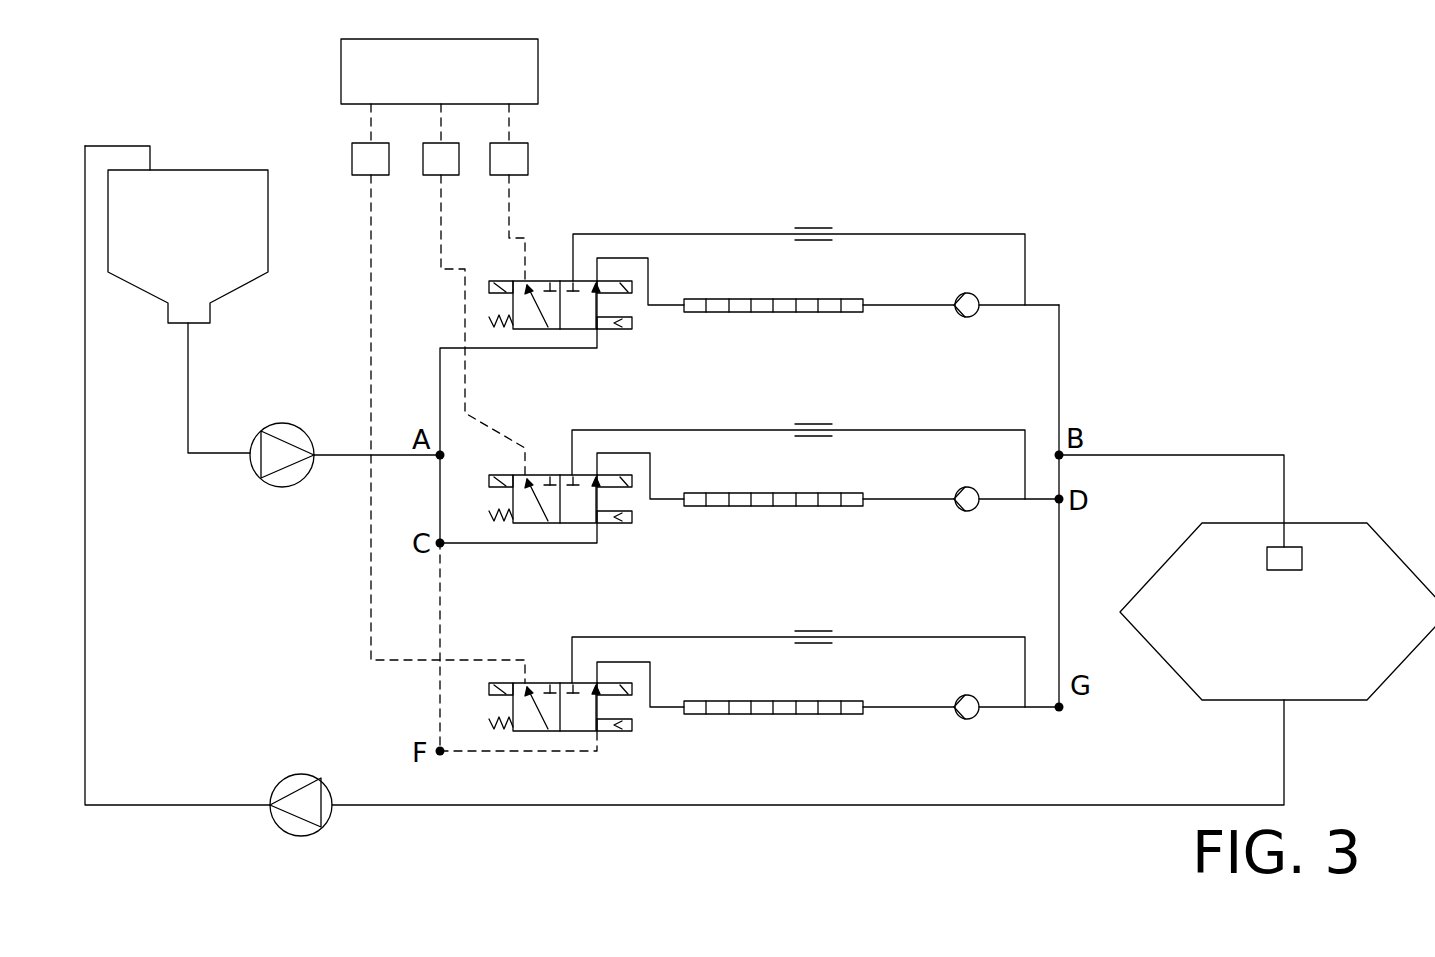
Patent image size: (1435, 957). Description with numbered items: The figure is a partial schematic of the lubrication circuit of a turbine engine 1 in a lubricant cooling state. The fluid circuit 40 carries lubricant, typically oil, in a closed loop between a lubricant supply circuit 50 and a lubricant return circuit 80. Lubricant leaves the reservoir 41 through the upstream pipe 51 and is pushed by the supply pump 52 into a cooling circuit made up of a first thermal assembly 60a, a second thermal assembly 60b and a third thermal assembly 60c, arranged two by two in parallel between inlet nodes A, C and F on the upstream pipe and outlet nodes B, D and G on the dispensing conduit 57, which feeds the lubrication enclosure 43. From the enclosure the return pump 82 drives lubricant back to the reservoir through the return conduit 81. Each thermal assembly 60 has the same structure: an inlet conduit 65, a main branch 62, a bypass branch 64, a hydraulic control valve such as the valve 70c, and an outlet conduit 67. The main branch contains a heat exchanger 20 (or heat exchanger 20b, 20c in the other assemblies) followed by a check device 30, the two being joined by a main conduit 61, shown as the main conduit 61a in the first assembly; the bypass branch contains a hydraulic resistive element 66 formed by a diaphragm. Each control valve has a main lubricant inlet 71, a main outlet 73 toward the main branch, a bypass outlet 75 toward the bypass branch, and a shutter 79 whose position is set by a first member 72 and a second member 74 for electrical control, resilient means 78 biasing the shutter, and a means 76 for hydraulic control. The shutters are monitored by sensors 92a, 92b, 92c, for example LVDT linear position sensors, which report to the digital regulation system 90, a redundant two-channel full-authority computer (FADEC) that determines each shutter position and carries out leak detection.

The turbine engine 1 is at (1322, 181).
The heat exchanger 20 is at (717, 298).
The heat exchanger of the second thermal assembly 20b is at (717, 492).
The heat exchanger of the third thermal assembly 20c is at (717, 700).
The check device 30 is at (955, 310).
The fluid circuit 40 is at (754, 151).
The reservoir 41 is at (232, 180).
The lubrication enclosure 43 is at (1285, 558).
The lubricant supply circuit 50 is at (243, 352).
The upstream pipe 51 is at (185, 385).
The supply pump 52 is at (293, 475).
The dispensing conduit 57 is at (1238, 455).
The thermal assembly 60 is at (887, 200).
The first thermal assembly 60a is at (984, 228).
The second thermal assembly 60b is at (984, 425).
The third thermal assembly 60c is at (1000, 703).
The main conduit 61 is at (990, 503).
The main conduit of the first thermal assembly 61a is at (990, 306).
The main branch 62 is at (1000, 493).
The bypass branch 64 is at (885, 425).
The inlet conduit 65 is at (440, 380).
The hydraulic resistive element 66 is at (813, 423).
The outlet conduit 67 is at (1062, 340).
The hydraulic control valve of the third thermal assembly 70c is at (880, 703).
The main lubricant inlet 71 is at (597, 528).
The first member for electrically controlling the shutter 72 is at (500, 475).
The main outlet 73 is at (673, 503).
The second member for electrically controlling the shutter 74 is at (652, 478).
The bypass outlet 75 is at (571, 280).
The means for hydraulic control of the shutter 76 is at (632, 520).
The resilient means for biasing the shutter 78 is at (500, 520).
The shutter 79 is at (547, 517).
The lubricant return circuit 80 is at (867, 822).
The return conduit 81 is at (760, 806).
The return pump 82 is at (286, 775).
The digital regulation system 90 is at (528, 55).
The sensor 92a is at (522, 155).
The sensor 92b is at (432, 175).
The sensor 92c is at (360, 175).